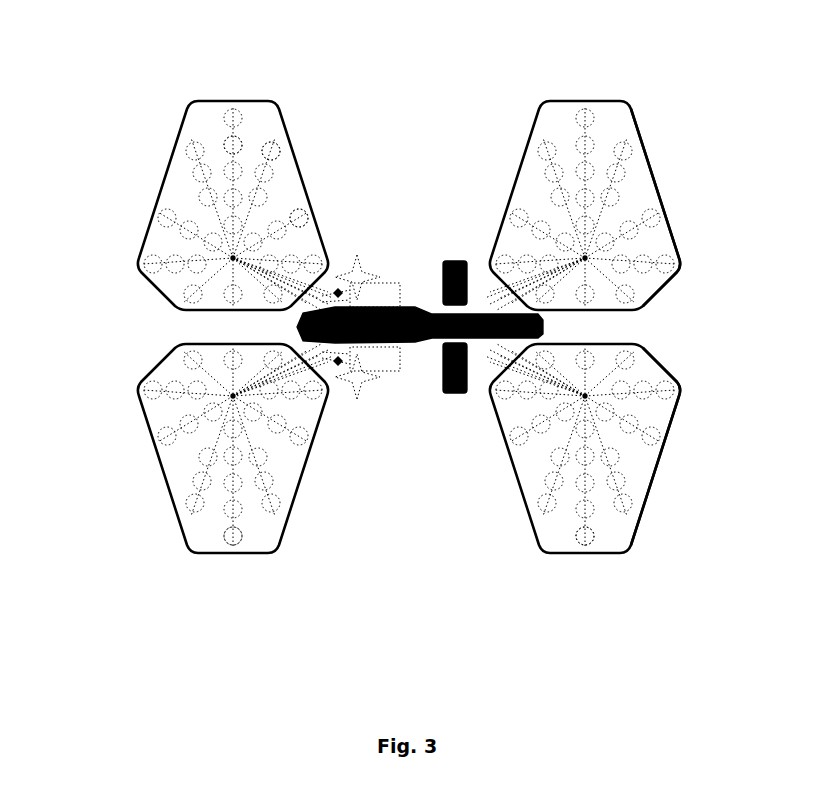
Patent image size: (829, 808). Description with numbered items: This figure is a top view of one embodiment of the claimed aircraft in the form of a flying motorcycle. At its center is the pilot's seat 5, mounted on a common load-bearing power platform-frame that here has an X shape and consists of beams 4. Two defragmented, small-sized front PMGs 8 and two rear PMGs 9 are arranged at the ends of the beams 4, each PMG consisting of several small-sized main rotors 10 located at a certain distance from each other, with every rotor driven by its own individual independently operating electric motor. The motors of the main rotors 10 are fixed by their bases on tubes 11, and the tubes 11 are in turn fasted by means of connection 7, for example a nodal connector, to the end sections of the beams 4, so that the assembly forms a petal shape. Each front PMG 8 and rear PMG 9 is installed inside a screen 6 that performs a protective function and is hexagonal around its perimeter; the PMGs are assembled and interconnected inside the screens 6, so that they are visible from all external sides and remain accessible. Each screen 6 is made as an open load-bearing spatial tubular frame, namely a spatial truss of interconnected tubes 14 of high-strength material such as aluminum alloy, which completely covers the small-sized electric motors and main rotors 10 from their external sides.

The beams of the load-bearing power platform-frame 4 is at (490, 295).
The pilot's seat 5 is at (430, 341).
The screens 6 is at (204, 100).
The means of connection 7 is at (233, 258).
The front PMGs 8 is at (180, 190).
The rear PMGs 9 is at (610, 122).
The small-sized (defragmented) main rotors 10 is at (295, 217).
The tubes 11 is at (585, 518).
The tubes of the open spatial tubular frame-screen 14 is at (610, 338).